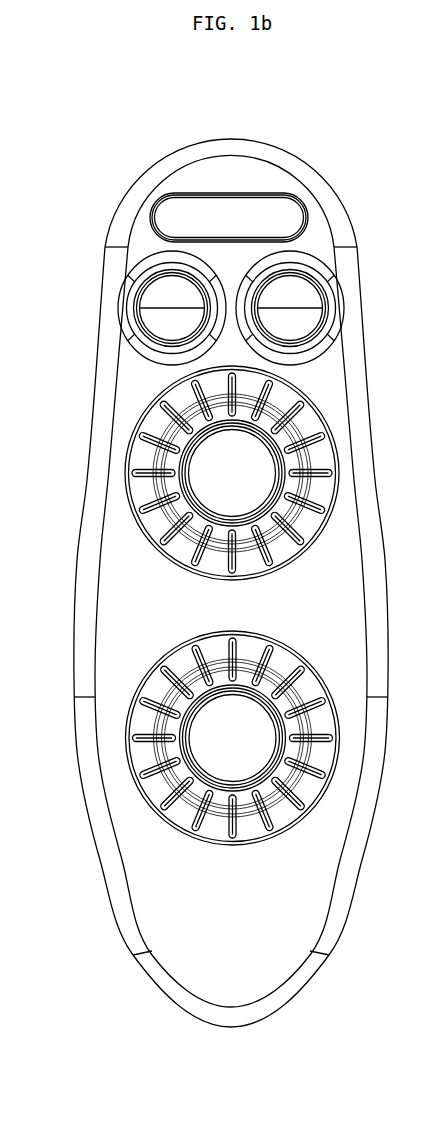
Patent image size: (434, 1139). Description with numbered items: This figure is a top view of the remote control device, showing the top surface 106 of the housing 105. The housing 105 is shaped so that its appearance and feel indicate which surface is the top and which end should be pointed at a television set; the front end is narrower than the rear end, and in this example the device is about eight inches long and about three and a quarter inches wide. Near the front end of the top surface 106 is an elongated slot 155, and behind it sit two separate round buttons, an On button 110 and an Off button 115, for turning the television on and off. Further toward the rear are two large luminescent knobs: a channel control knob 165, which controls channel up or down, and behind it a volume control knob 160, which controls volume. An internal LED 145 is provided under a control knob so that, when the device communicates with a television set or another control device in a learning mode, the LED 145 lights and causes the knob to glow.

The housing 105 is at (210, 892).
The top surface 106 is at (283, 972).
The On button 110 is at (170, 290).
The Off button 115 is at (290, 290).
The internal LED 145 is at (233, 470).
The slot 155 is at (222, 213).
The volume control knob 160 is at (230, 727).
The channel control knob 165 is at (170, 512).